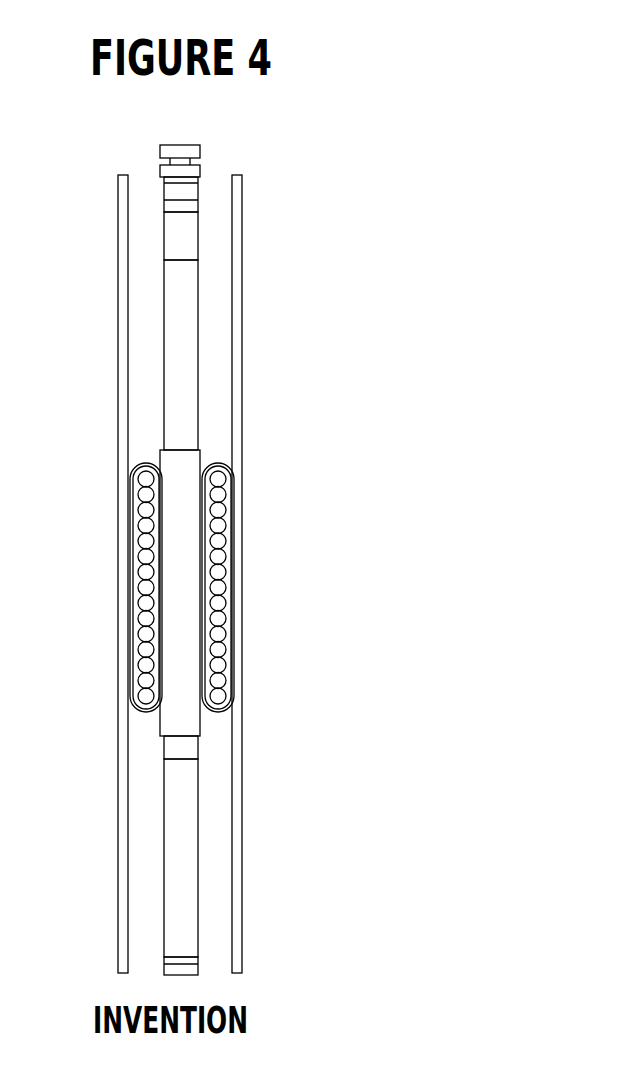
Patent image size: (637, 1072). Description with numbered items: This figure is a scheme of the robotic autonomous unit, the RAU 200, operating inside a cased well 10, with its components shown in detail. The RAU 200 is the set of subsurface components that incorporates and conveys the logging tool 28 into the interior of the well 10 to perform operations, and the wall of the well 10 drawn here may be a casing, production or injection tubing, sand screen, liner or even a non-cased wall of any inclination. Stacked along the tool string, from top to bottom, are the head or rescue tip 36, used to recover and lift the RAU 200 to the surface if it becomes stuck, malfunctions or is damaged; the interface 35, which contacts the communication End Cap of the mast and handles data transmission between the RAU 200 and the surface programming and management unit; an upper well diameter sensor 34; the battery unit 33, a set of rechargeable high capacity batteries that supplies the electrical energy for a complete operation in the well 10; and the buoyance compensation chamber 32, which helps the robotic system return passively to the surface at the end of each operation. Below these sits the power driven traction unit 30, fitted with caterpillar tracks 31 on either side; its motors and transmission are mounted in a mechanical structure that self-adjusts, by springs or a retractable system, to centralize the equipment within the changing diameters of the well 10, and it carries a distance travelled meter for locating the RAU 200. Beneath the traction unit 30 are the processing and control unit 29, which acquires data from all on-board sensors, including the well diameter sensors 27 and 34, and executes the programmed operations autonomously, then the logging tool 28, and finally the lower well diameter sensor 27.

The RAU 200 is at (410, 215).
The well 10 is at (118, 342).
The head or rescue tip 36 is at (200, 166).
The interface 35 is at (163, 182).
The well diameter sensor 34 is at (198, 208).
The battery unit 33 is at (183, 245).
The buoyance compensation chamber 32 is at (180, 408).
The caterpillar tracks 31 is at (140, 467).
The power driven traction unit 30 is at (192, 567).
The processing and control unit 29 is at (190, 753).
The logging tool 28 is at (180, 847).
The well diameter sensor 27 is at (193, 962).